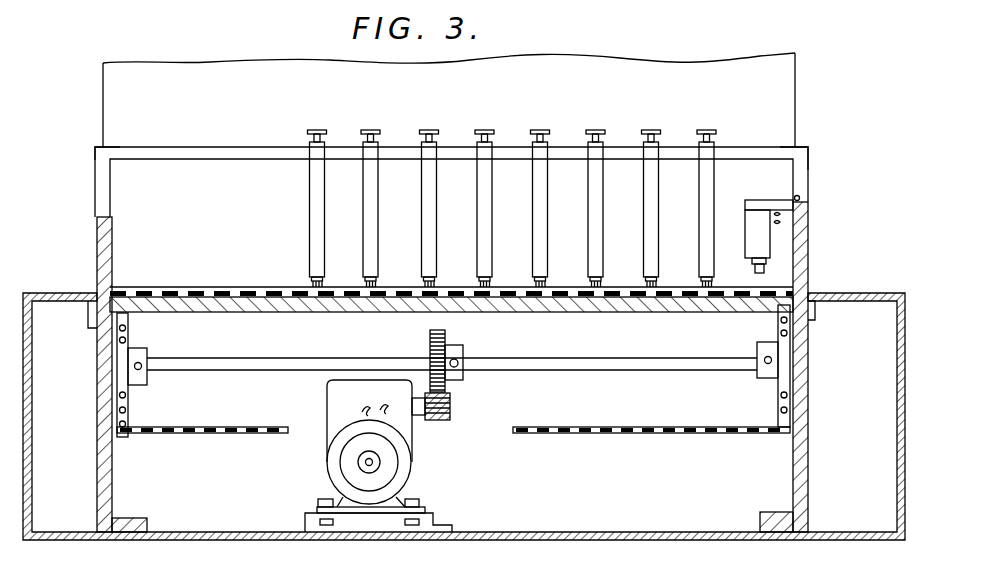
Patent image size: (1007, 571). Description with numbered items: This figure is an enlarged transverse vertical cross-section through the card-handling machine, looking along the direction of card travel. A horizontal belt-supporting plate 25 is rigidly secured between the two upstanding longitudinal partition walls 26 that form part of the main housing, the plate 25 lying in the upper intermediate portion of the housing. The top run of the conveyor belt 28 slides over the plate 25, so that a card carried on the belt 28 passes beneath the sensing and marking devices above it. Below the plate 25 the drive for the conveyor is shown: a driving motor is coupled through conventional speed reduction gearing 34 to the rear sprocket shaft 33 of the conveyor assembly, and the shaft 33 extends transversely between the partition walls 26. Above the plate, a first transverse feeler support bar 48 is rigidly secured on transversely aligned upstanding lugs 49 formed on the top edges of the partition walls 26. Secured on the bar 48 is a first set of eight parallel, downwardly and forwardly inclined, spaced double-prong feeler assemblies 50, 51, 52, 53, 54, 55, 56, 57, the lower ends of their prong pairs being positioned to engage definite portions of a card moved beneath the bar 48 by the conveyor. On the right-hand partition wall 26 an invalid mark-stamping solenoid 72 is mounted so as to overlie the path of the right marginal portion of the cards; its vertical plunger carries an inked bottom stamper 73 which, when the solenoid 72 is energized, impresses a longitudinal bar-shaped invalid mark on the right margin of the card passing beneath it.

The belt-supporting plate 25 is at (572, 297).
The partition wall 26 is at (97, 246).
The belt 28 is at (640, 427).
The rear sprocket shaft 33 is at (505, 368).
The speed reduction gearing 34 is at (324, 404).
The first transverse feeler support bar 48 is at (152, 158).
The upstanding lug 49 is at (95, 179).
The double-prong feeler assembly 50 is at (309, 185).
The double-prong feeler assembly 51 is at (364, 182).
The double-prong feeler assembly 52 is at (422, 182).
The double-prong feeler assembly 53 is at (478, 188).
The double-prong feeler assembly 54 is at (533, 183).
The double-prong feeler assembly 55 is at (589, 182).
The double-prong feeler assembly 56 is at (644, 178).
The double-prong feeler assembly 57 is at (699, 178).
The invalid mark-stamping solenoid 72 is at (743, 215).
The inked bottom stamper 73 is at (755, 270).